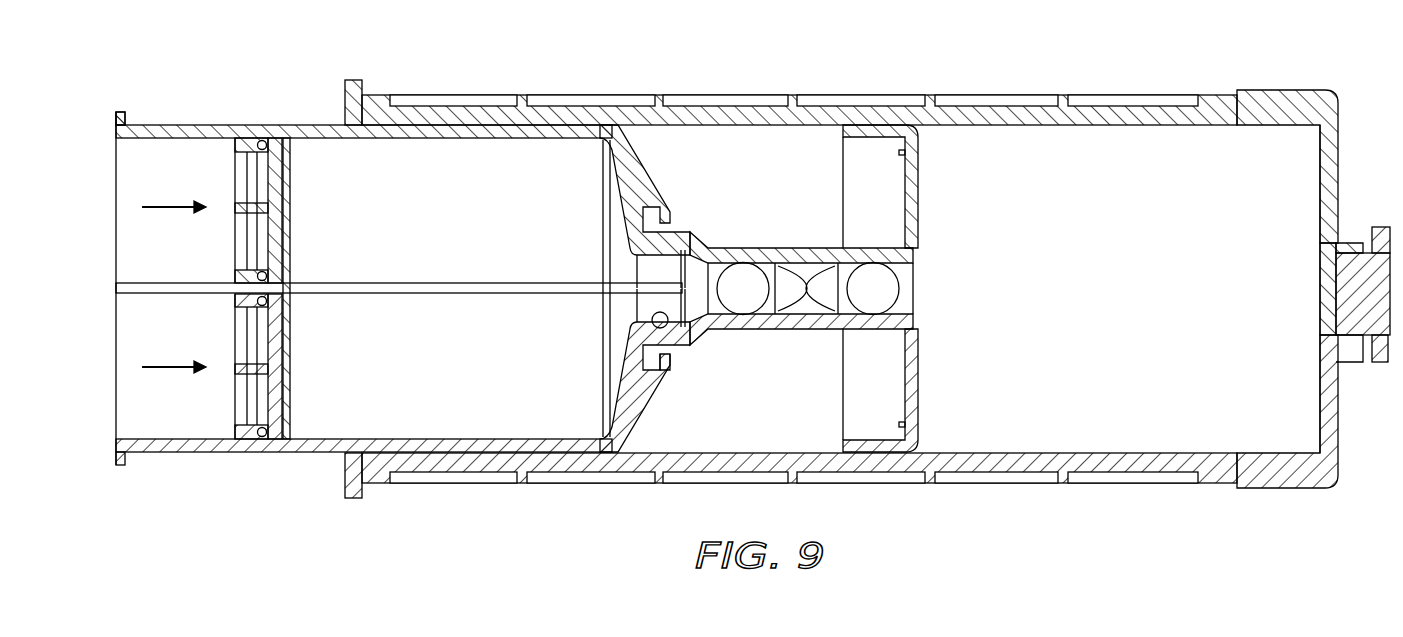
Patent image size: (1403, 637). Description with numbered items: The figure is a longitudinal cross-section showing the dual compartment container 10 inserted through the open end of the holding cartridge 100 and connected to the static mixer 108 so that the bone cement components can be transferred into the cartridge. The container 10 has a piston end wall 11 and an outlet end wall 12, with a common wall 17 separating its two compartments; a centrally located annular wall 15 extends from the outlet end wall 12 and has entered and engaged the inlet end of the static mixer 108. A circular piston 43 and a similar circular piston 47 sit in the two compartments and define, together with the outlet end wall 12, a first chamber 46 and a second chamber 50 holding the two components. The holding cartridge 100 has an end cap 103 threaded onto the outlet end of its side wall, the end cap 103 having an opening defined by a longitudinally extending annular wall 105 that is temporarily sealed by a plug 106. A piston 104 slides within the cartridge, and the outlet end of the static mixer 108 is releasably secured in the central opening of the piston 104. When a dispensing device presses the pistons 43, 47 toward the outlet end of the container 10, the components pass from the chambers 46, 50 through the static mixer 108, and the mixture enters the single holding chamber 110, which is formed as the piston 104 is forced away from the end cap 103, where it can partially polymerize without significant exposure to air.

The holding cartridge 100 is at (877, 72).
The end cap 103 is at (1339, 150).
The plug 106 is at (1383, 226).
The annular wall 105 is at (1350, 346).
The holding chamber 110 is at (1144, 304).
The dual compartment container 10 is at (312, 468).
The piston end wall 11 is at (120, 112).
The common wall 17 is at (150, 283).
The circular piston 43 is at (235, 162).
The circular piston 47 is at (235, 398).
The first chamber 46 is at (462, 221).
The second chamber 50 is at (462, 373).
The outlet end wall 12 is at (650, 172).
The annular wall 15 is at (672, 335).
The static mixer 108 is at (783, 248).
The piston 104 is at (906, 390).